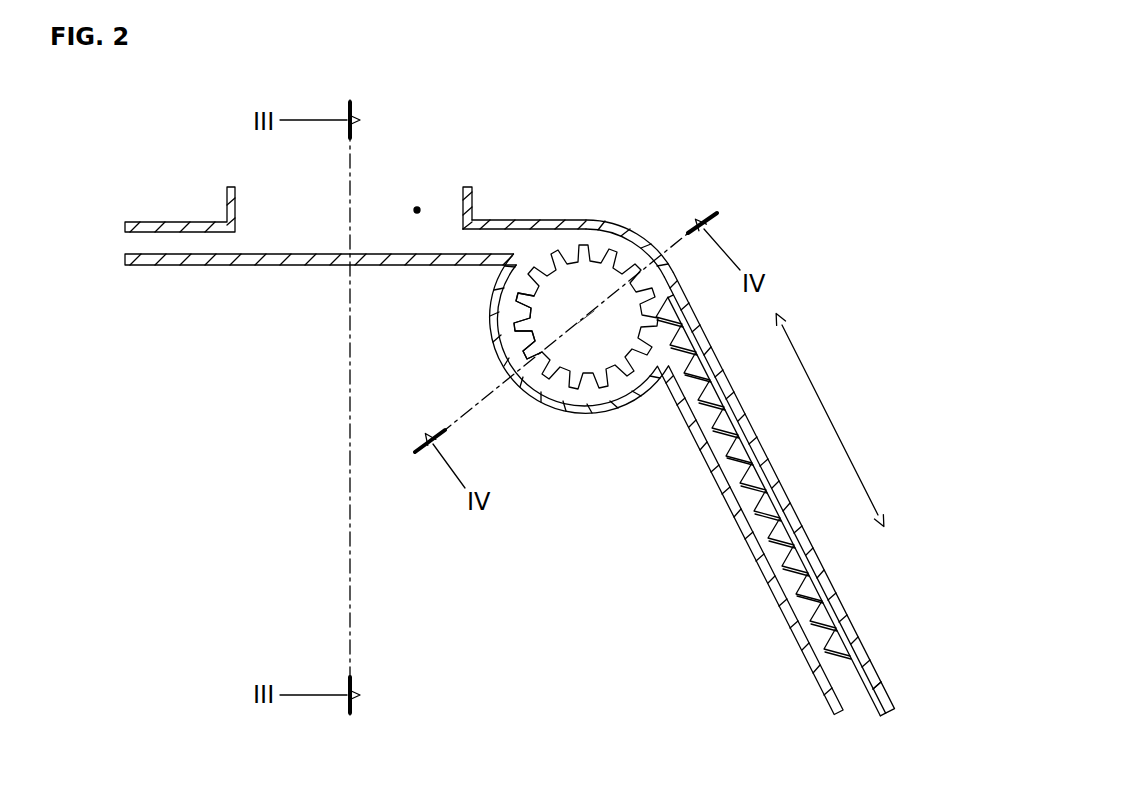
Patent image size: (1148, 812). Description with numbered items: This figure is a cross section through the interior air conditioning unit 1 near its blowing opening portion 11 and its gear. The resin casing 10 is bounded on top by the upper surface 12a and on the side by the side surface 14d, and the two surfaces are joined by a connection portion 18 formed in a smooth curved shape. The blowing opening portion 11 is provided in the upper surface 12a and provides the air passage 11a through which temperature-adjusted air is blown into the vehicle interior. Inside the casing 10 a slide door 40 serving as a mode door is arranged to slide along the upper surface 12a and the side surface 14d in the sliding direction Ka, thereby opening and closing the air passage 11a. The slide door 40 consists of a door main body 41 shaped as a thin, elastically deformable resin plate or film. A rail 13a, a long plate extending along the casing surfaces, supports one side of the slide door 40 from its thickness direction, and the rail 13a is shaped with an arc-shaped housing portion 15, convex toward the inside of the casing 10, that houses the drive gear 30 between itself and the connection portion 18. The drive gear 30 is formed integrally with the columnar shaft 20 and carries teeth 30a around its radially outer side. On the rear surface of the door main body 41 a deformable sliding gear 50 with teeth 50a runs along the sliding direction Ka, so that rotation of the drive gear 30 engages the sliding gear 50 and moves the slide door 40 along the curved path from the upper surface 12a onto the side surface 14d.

The interior air conditioning unit 1 is at (139, 595).
The casing 10 is at (546, 218).
The blowing opening portion 11 is at (476, 199).
The air passage 11a is at (417, 207).
The upper surface 12a is at (171, 221).
The rail 13a is at (206, 267).
The side surface 14d is at (817, 553).
The housing portion 15 is at (536, 404).
The connection portion 18 is at (629, 238).
The shaft 20 is at (584, 332).
The drive gear 30 is at (612, 386).
The teeth 30a is at (532, 339).
The slide door 40 is at (806, 581).
The door main body 41 is at (858, 638).
The sliding gear 50 is at (737, 462).
The teeth 50a is at (756, 510).
The sliding direction Ka is at (834, 410).